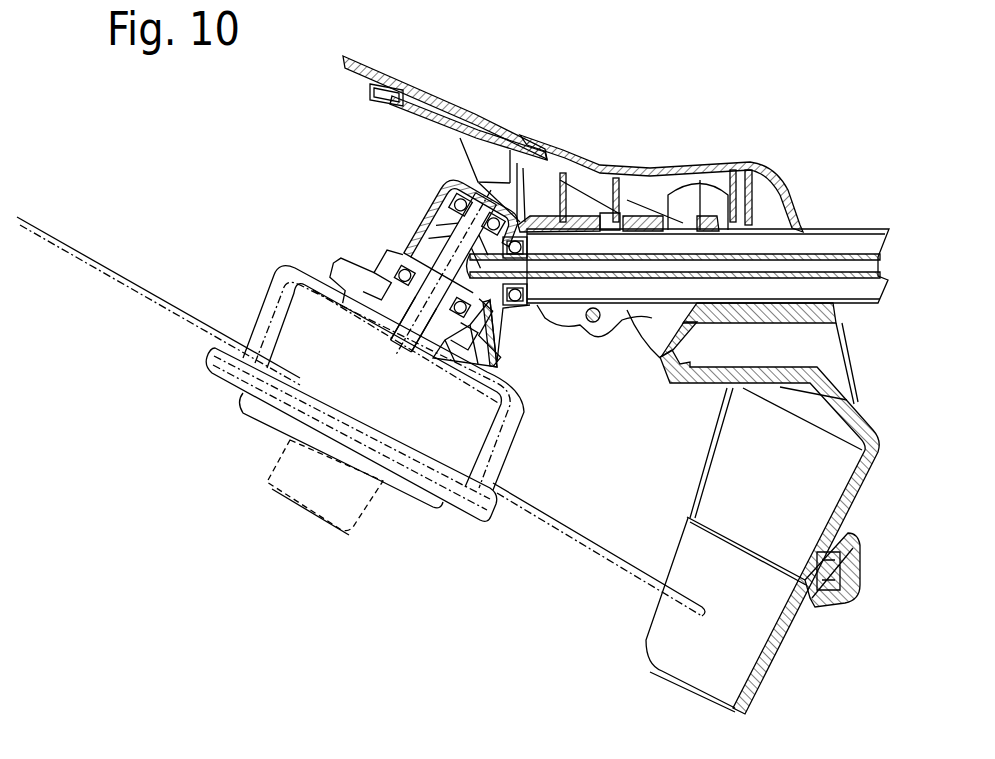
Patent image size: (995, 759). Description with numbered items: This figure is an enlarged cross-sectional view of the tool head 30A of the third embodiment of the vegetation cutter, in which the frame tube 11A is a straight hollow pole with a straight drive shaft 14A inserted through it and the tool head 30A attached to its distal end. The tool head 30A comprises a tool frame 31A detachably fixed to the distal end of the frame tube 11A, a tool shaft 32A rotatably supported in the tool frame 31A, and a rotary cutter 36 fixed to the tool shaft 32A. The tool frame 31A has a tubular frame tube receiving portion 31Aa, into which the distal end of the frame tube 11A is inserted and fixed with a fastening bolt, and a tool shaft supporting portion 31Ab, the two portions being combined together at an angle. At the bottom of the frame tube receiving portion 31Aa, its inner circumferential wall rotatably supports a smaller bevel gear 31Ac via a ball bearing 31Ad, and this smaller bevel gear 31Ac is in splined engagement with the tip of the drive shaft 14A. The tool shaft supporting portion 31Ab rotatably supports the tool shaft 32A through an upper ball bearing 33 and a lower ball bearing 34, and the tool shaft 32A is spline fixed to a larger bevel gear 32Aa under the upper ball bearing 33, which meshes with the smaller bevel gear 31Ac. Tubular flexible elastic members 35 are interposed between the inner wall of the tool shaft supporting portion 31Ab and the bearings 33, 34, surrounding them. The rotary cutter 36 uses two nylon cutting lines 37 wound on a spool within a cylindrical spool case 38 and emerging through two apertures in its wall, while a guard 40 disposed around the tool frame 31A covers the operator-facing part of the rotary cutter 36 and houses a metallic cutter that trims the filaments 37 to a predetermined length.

The tool head 30A is at (278, 175).
The frame tube 11A is at (857, 230).
The drive shaft 14A is at (821, 257).
The tool frame 31A is at (440, 227).
The frame tube receiving portion 31Aa is at (577, 220).
The tool shaft supporting portion 31Ab is at (392, 252).
The smaller bevel gear 31Ac is at (508, 314).
The ball bearing 31Ad is at (512, 302).
The tool shaft 32A is at (406, 240).
The larger bevel gear 32Aa is at (437, 203).
The upper ball bearing 33 is at (465, 203).
The lower ball bearing 34 is at (485, 328).
The tubular flexible elastic member 35 is at (459, 203).
The rotary cutter 36 is at (213, 367).
The cutting line 37 is at (127, 290).
The spool case 38 is at (263, 300).
The guard 40 is at (774, 640).